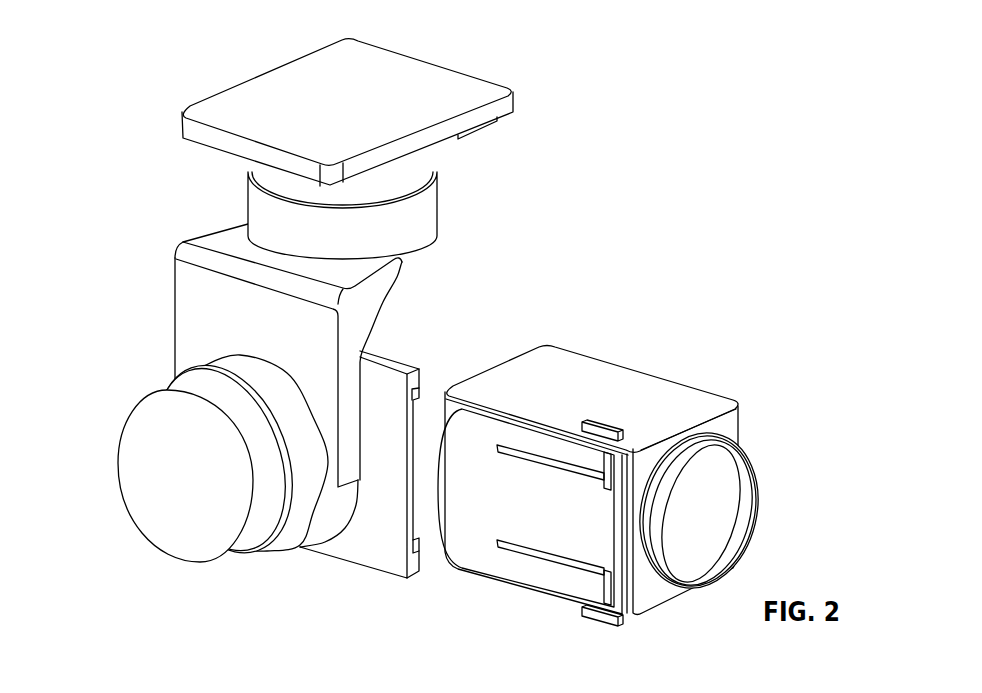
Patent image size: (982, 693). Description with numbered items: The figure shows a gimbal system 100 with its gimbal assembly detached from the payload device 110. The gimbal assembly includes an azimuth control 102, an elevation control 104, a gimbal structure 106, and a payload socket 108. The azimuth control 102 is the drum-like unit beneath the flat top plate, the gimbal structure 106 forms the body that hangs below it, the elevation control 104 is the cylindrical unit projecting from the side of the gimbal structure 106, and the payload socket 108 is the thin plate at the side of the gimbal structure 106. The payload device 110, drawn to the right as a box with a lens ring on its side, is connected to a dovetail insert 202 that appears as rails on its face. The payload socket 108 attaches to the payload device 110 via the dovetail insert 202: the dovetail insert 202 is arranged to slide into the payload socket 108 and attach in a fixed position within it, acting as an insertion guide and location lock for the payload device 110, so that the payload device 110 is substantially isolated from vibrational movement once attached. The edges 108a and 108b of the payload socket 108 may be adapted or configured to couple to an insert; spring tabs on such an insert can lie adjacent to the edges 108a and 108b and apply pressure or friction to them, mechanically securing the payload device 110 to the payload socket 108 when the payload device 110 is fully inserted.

The gimbal system 100 is at (146, 62).
The azimuth control 102 is at (428, 208).
The elevation control 104 is at (132, 512).
The gimbal structure 106 is at (188, 252).
The payload socket 108 is at (358, 552).
The edge 108a is at (418, 392).
The edge 108b is at (421, 556).
The payload device 110 is at (657, 386).
The dovetail insert 202 is at (583, 550).